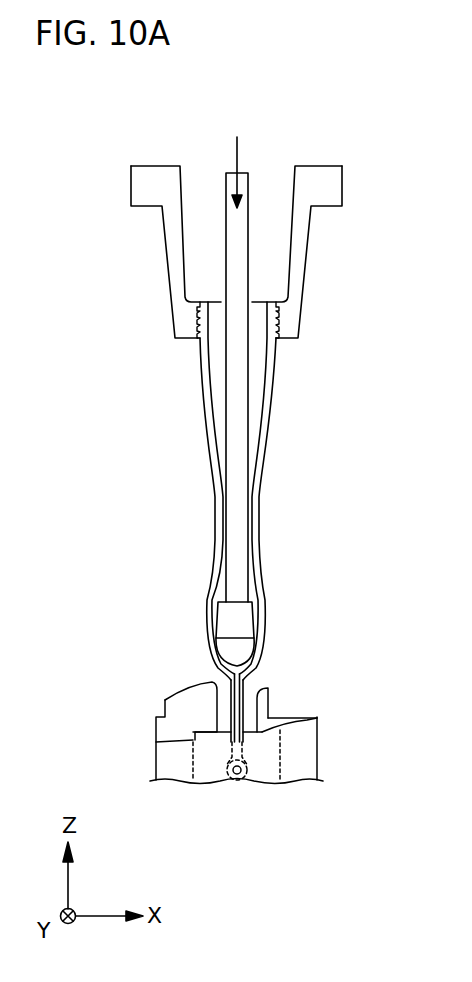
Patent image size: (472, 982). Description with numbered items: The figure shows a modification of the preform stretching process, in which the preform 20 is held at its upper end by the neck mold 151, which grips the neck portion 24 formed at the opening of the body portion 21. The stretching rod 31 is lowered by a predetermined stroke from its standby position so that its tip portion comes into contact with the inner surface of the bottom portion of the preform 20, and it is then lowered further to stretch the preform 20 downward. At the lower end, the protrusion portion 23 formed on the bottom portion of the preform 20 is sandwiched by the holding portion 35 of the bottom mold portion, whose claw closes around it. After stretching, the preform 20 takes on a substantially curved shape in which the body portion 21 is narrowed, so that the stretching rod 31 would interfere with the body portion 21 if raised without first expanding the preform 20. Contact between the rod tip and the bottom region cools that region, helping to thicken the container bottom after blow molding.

The preform 20 is at (303, 439).
The body portion 21 is at (260, 518).
The protrusion portion 23 is at (243, 688).
The neck portion 24 is at (277, 320).
The stretching rod 31 is at (248, 237).
The holding portion 35 is at (243, 710).
The neck mold 151 is at (166, 282).